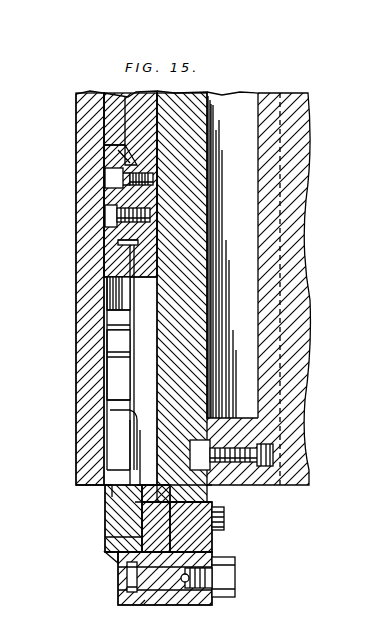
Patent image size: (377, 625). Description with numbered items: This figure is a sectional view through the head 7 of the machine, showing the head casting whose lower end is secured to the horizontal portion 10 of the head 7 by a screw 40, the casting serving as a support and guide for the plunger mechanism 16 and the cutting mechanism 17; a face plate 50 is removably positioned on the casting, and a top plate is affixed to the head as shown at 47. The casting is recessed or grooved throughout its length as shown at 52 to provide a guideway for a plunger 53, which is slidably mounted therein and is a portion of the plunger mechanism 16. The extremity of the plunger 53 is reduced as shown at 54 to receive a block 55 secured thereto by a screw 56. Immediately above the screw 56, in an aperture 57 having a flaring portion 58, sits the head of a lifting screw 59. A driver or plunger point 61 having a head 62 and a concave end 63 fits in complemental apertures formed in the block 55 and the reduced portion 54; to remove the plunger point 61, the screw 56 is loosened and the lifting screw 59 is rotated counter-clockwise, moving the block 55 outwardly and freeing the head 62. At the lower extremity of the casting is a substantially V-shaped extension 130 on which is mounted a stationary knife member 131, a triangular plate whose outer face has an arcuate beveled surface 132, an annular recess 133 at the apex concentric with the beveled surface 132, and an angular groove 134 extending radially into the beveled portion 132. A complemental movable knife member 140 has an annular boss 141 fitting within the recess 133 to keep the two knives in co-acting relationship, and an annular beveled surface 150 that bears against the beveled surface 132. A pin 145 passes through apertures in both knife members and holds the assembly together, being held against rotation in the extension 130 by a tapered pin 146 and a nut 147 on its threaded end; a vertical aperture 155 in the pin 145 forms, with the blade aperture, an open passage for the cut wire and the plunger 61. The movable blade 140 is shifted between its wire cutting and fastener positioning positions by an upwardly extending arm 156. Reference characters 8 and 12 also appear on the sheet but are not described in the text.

The head 7 is at (298, 150).
The housing wall 8 is at (285, 285).
The horizontal portion 10 is at (237, 400).
The sleeve 12 is at (75, 492).
The plunger mechanism 16 is at (141, 92).
The cutting mechanism 17 is at (102, 554).
The screw 40 is at (250, 478).
The top plate fastening 47 is at (192, 267).
The face plate 50 is at (84, 331).
The recess or groove 52 is at (190, 300).
The plunger 53 is at (118, 92).
The reduced portion 54 is at (190, 160).
The block 55 is at (112, 256).
The screw 56 is at (110, 212).
The aperture 57 is at (125, 168).
The flaring portion 58 is at (122, 157).
The lifting screw 59 is at (118, 182).
The driver or plunger point 61 is at (125, 298).
The head 62 is at (122, 244).
The concave end 63 is at (135, 408).
The V-shaped extension 130 is at (212, 540).
The stationary knife member 131 is at (120, 507).
The arcuate beveled surface 132 is at (226, 516).
The annular recess 133 is at (215, 548).
The angular groove 134 is at (210, 486).
The movable knife member 140 is at (118, 522).
The annular boss 141 is at (115, 537).
The pin 145 is at (147, 600).
The tapered pin 146 is at (185, 588).
The nut 147 is at (236, 560).
The annular beveled surface 150 is at (113, 500).
The vertical aperture 155 is at (128, 580).
The upwardly extending arm 156 is at (113, 362).